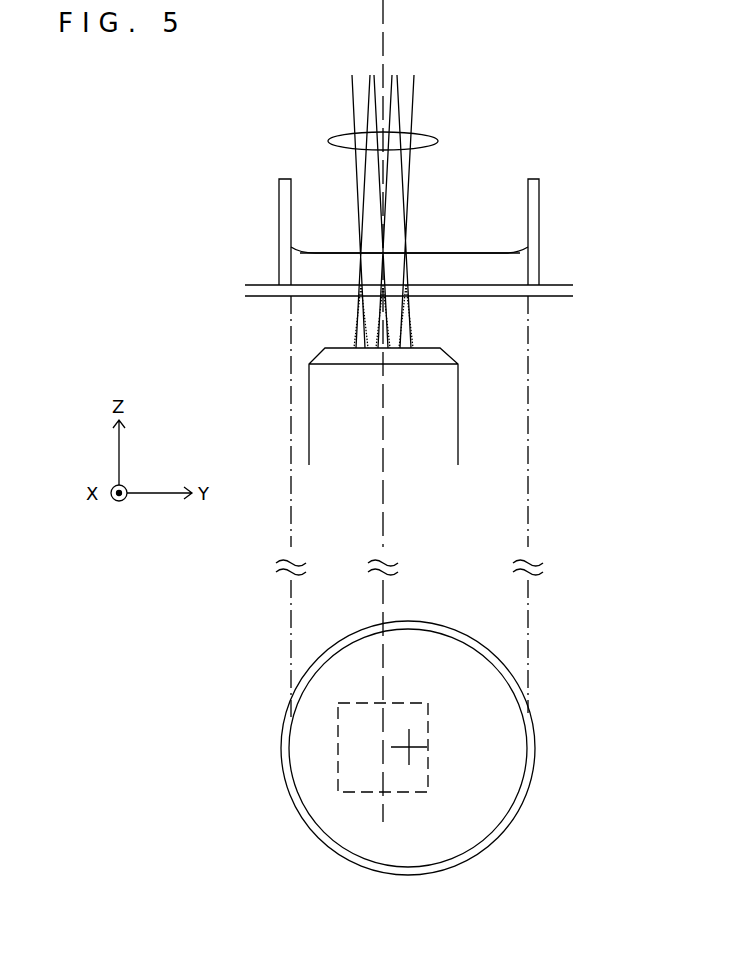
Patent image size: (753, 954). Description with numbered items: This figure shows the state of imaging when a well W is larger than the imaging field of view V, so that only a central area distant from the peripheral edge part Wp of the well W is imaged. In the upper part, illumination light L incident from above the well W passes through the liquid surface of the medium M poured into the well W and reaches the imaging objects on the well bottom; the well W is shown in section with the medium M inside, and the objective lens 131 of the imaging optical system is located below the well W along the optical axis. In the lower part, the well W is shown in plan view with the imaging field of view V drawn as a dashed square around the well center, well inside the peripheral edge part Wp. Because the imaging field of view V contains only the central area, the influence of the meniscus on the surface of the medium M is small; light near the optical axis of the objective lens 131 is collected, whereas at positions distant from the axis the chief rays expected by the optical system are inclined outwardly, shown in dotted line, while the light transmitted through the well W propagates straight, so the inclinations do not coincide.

The well W is at (292, 198).
The peripheral edge part Wp is at (311, 233).
The illumination light L is at (437, 142).
The medium M is at (463, 267).
The objective lens 131 is at (308, 382).
The imaging field of view V is at (338, 760).